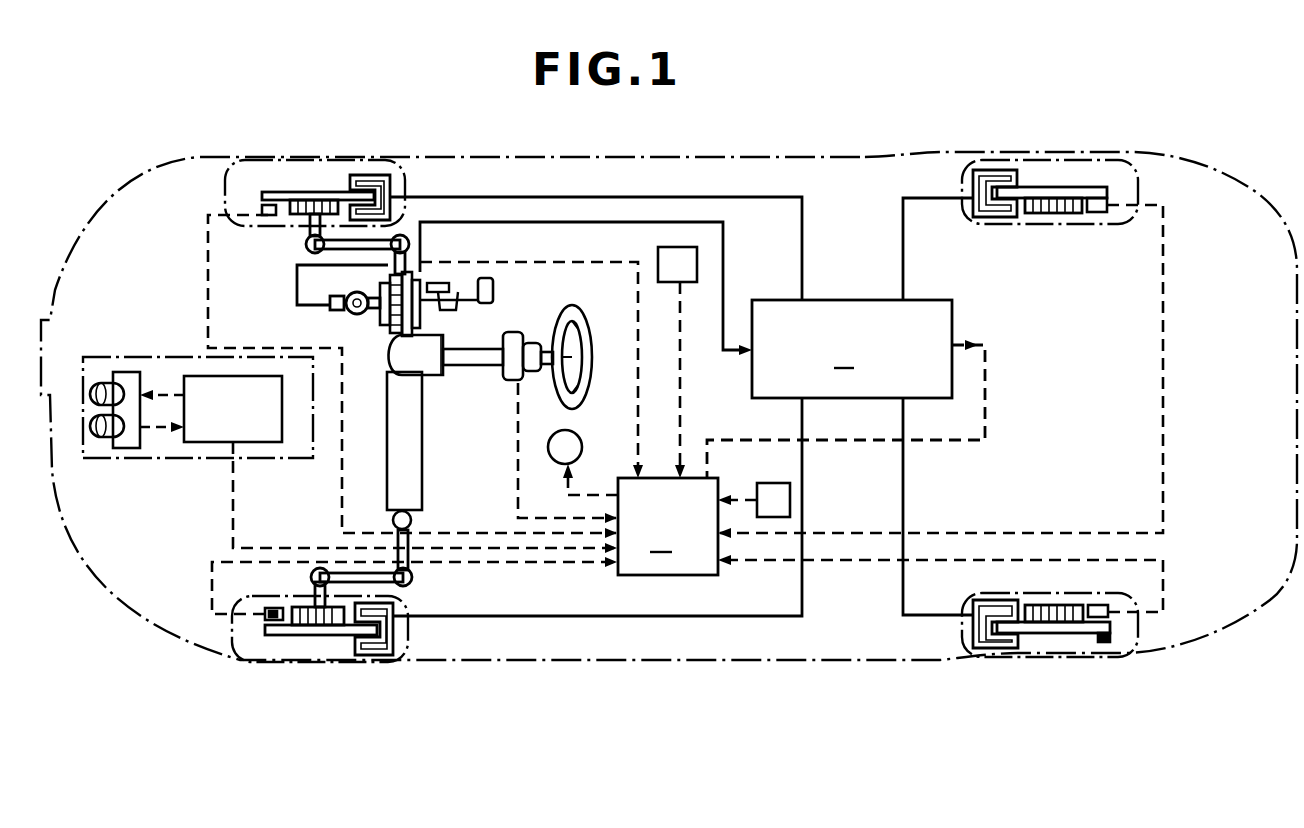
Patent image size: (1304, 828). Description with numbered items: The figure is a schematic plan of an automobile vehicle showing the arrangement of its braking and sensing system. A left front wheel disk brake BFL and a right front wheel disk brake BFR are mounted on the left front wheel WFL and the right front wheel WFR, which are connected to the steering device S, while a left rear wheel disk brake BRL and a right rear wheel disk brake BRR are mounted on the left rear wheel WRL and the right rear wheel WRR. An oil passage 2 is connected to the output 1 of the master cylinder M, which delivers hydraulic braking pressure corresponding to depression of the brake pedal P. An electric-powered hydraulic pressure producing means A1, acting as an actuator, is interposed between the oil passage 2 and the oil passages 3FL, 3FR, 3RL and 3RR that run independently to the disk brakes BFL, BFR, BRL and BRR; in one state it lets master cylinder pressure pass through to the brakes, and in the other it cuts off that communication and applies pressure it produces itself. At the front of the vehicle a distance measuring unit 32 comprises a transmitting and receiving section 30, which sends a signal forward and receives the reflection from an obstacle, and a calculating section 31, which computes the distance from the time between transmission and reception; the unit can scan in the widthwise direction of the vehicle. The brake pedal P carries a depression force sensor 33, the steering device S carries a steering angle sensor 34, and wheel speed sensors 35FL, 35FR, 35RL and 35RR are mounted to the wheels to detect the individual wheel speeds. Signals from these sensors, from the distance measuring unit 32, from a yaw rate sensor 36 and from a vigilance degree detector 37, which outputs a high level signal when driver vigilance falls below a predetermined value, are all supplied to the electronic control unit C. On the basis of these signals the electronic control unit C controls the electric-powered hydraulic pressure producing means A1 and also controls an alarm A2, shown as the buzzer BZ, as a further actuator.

The output 1 is at (325, 318).
The oil passage 2 is at (724, 265).
The oil passage 3FR is at (600, 197).
The oil passage 3FL is at (596, 628).
The oil passage 3RR is at (903, 268).
The oil passage 3RL is at (903, 503).
The transmitting and receiving section 30 is at (132, 372).
The calculating section 31 is at (210, 424).
The distance measuring unit 32 is at (117, 458).
The depression force sensor 33 is at (437, 283).
The steering angle sensor 34 is at (502, 380).
The wheel speed sensor 35FR is at (268, 216).
The wheel speed sensor 35FL is at (267, 618).
The wheel speed sensor 35RR is at (1098, 214).
The wheel speed sensor 35RL is at (1098, 628).
The yaw rate sensor 36 is at (686, 283).
The vigilance degree detector 37 is at (770, 483).
The electric-powered hydraulic pressure producing means A1 is at (846, 389).
The alarm A2 is at (586, 443).
The buzzer BZ is at (586, 443).
The electronic control unit C is at (668, 526).
The master cylinder M is at (383, 325).
The brake pedal P is at (494, 292).
The steering device S is at (430, 404).
The right front wheel disk brake BFR is at (340, 172).
The left front wheel disk brake BFL is at (360, 664).
The right rear wheel disk brake BRR is at (1014, 228).
The left rear wheel disk brake BRL is at (1033, 658).
The right front wheel WFR is at (408, 177).
The left front wheel WFL is at (330, 658).
The right rear wheel WRR is at (1142, 163).
The left rear wheel WRL is at (964, 645).